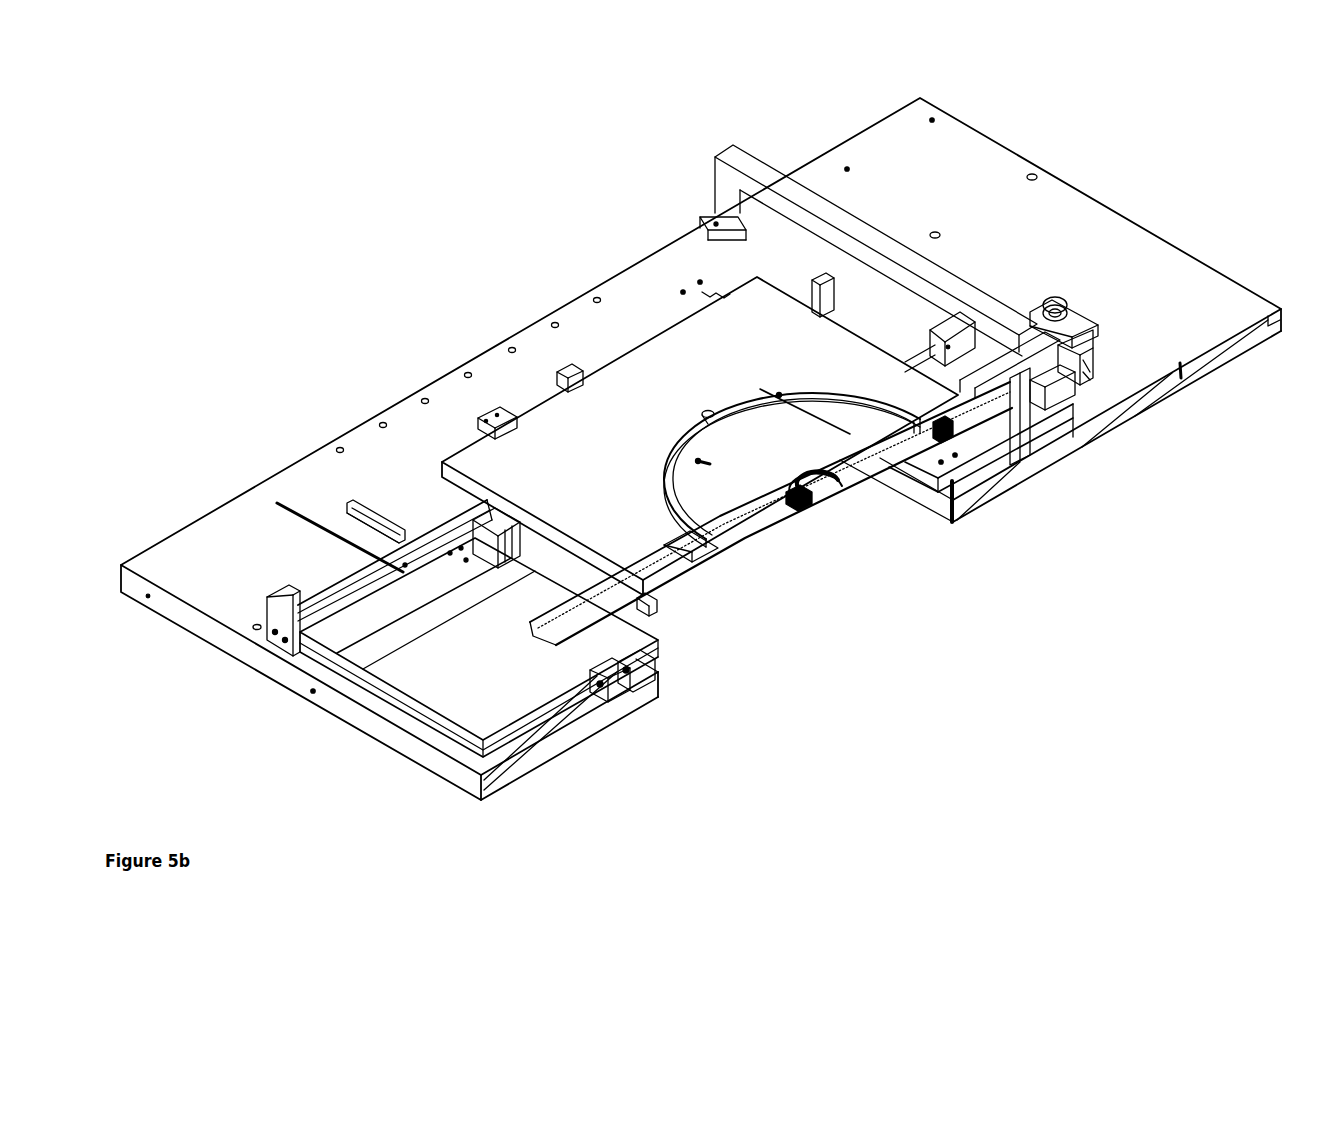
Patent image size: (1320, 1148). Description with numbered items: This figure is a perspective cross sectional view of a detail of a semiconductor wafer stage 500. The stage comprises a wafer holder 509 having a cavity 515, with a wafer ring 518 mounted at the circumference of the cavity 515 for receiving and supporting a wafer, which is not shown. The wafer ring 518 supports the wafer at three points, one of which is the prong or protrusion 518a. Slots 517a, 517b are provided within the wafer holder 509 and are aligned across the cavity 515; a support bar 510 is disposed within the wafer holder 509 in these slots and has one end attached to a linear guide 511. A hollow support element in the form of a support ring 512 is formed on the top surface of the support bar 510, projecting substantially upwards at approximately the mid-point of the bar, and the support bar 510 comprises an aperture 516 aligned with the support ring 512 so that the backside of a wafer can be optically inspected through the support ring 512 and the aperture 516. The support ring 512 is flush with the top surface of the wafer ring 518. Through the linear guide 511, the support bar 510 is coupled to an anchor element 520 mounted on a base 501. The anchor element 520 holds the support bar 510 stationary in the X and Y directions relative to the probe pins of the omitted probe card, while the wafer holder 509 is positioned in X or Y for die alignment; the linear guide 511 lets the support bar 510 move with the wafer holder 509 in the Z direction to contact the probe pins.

The semiconductor wafer stage 500 is at (390, 826).
The base 501 is at (1063, 175).
The wafer holder 509 is at (565, 430).
The support bar 510 is at (553, 630).
The linear guide 511 is at (1070, 318).
The support ring 512 is at (841, 478).
The cavity 515 is at (818, 530).
The aperture 516 is at (812, 481).
The slot 517a is at (540, 545).
The slot 517b is at (952, 408).
The wafer ring 518 is at (740, 395).
The prong 518a is at (687, 460).
The anchor element 520 is at (988, 303).